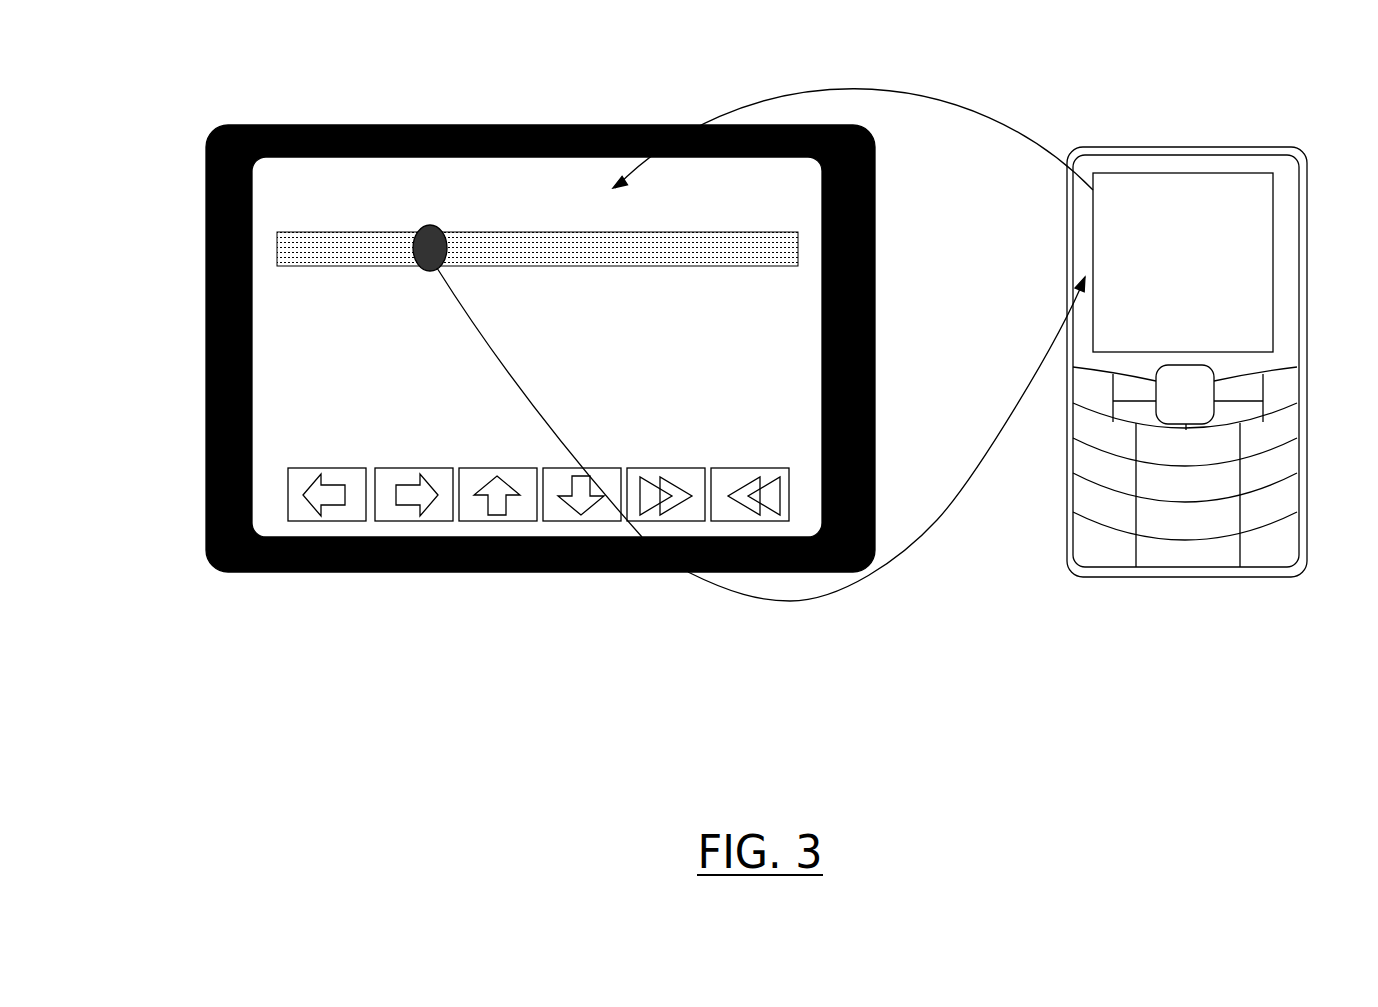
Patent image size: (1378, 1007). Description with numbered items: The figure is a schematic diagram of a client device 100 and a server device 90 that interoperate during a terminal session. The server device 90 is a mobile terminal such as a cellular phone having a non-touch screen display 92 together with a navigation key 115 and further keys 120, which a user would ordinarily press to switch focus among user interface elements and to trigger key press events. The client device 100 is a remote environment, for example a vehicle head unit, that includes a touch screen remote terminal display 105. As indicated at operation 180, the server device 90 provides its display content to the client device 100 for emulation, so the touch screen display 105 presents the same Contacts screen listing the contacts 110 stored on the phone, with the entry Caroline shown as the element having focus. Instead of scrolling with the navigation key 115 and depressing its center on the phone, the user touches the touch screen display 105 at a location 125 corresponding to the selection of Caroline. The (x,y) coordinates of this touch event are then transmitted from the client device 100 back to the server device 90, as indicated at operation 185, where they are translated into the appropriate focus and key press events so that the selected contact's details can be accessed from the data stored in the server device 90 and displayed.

The client device 100 is at (352, 125).
The remote terminal display 105 is at (477, 283).
The contacts 110 is at (282, 347).
The location 125 is at (430, 236).
The operation 180 is at (1013, 127).
The operation 185 is at (710, 583).
The server device 90 is at (1145, 341).
The display 92 is at (1248, 193).
The navigation key 115 is at (1193, 412).
The keys 120 is at (1100, 550).